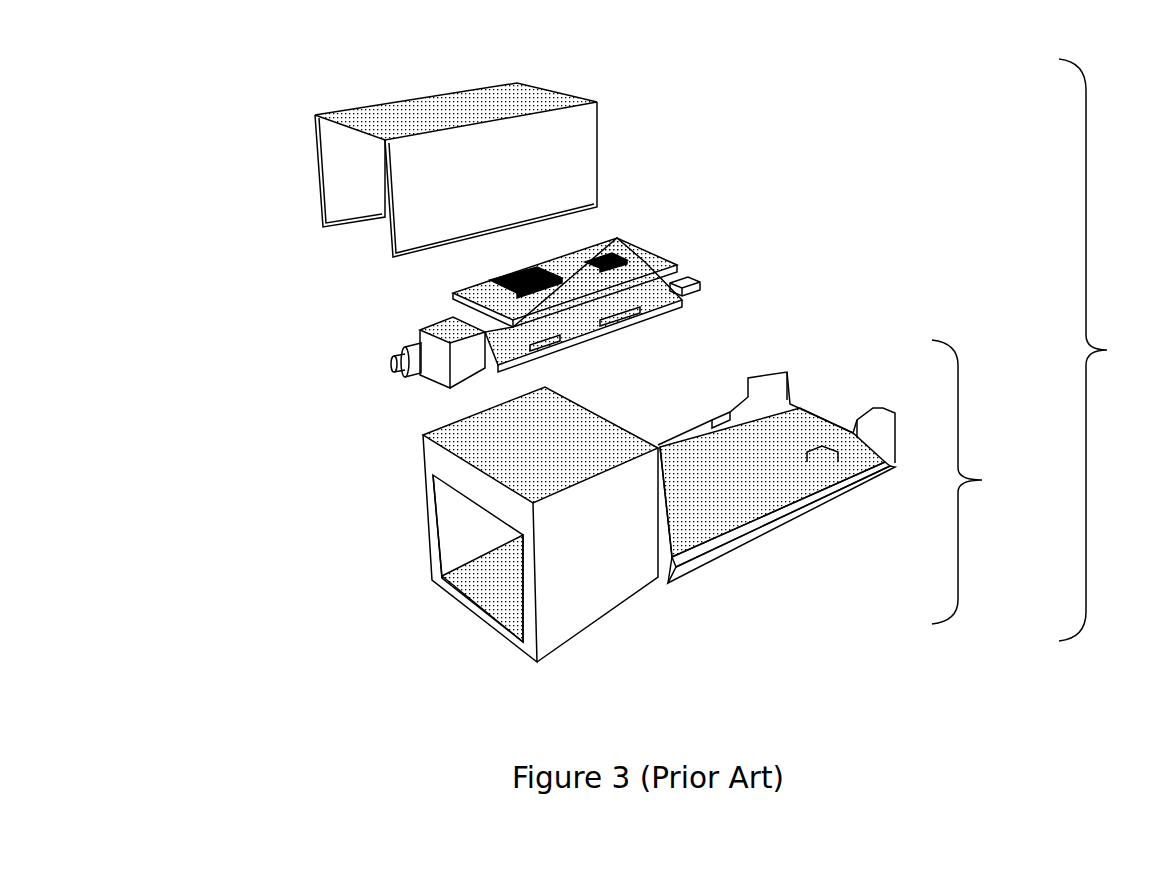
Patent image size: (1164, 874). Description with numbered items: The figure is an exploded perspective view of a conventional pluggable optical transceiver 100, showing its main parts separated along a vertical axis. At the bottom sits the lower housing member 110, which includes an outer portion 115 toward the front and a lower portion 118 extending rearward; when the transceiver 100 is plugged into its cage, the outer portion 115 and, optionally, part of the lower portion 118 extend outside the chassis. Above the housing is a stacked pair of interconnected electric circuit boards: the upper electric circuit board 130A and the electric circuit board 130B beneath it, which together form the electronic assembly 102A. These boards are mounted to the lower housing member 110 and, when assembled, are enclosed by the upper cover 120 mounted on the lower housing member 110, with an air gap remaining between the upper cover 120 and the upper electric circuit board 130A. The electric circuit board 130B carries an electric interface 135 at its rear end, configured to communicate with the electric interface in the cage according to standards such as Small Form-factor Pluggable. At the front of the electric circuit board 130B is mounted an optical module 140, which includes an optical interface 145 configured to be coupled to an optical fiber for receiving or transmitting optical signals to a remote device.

The pluggable optical transceiver 100 is at (1111, 350).
The electronic assembly 102A is at (526, 327).
The lower housing member 110 is at (984, 482).
The outer portion 115 is at (627, 575).
The lower portion 118 is at (853, 472).
The upper cover 120 is at (572, 97).
The upper electric circuit board 130A is at (650, 255).
The electric circuit board 130B is at (653, 312).
The electric interface 135 is at (700, 282).
The optical module 140 is at (443, 378).
The optical interface 145 is at (393, 366).